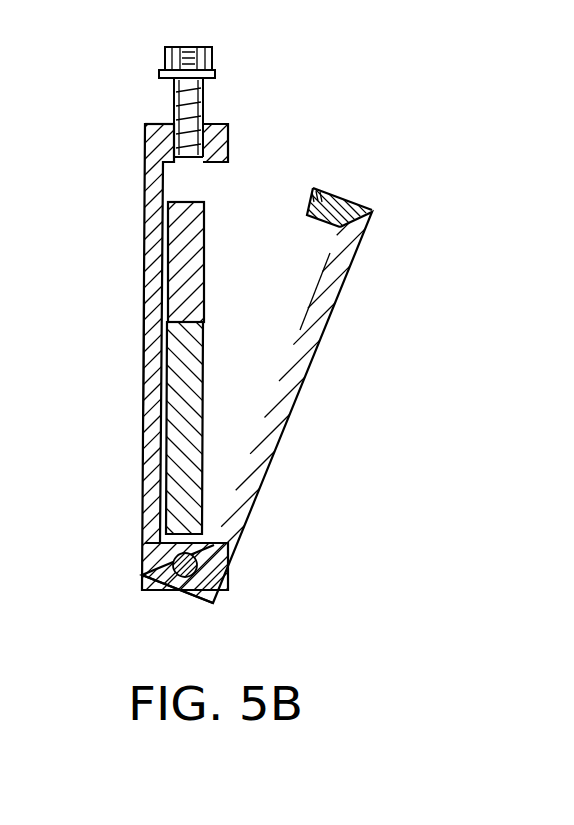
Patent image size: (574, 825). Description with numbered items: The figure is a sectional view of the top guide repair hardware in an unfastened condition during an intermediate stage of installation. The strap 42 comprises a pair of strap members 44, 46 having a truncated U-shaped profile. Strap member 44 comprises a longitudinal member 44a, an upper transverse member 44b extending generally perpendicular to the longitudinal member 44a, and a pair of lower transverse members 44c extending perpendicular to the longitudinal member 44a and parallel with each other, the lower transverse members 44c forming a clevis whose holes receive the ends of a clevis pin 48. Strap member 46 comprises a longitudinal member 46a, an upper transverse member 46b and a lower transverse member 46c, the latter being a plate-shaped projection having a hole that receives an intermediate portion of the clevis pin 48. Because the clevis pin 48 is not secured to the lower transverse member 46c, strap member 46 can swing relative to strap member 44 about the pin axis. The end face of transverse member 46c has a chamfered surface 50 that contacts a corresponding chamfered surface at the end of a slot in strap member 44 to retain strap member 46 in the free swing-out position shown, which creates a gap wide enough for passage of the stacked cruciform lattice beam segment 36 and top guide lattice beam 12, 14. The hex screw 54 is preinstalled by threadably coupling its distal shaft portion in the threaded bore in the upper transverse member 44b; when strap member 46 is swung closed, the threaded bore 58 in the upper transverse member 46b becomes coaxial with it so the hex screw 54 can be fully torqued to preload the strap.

The top guide lattice beam 12 is at (197, 363).
The cooler block 14 is at (215, 439).
The cruciform lattice beam segment 36 is at (205, 230).
The strap 42 is at (144, 179).
The strap member 44 is at (143, 371).
The longitudinal member 44a is at (142, 461).
The upper transverse member 44b is at (215, 127).
The lower transverse members 44c is at (152, 592).
The strap member 46 is at (302, 380).
The longitudinal member 46a is at (330, 317).
The upper transverse member 46b is at (350, 213).
The lower transverse member 46c is at (215, 600).
The clevis pin 48 is at (222, 566).
The chamfered surface 50 is at (147, 541).
The hex screw 54 is at (200, 52).
The threaded bore 58 is at (333, 225).